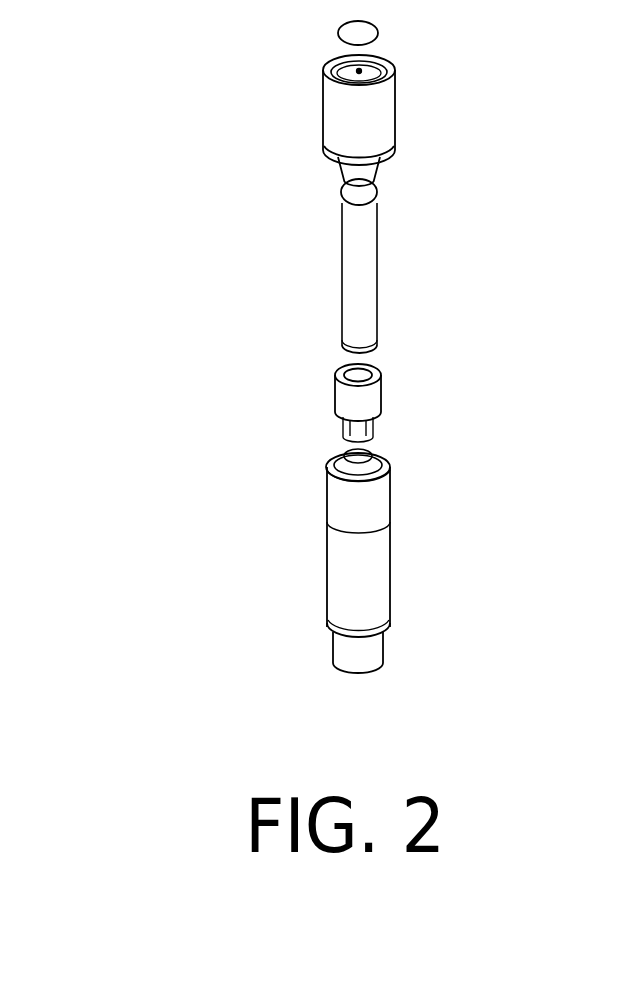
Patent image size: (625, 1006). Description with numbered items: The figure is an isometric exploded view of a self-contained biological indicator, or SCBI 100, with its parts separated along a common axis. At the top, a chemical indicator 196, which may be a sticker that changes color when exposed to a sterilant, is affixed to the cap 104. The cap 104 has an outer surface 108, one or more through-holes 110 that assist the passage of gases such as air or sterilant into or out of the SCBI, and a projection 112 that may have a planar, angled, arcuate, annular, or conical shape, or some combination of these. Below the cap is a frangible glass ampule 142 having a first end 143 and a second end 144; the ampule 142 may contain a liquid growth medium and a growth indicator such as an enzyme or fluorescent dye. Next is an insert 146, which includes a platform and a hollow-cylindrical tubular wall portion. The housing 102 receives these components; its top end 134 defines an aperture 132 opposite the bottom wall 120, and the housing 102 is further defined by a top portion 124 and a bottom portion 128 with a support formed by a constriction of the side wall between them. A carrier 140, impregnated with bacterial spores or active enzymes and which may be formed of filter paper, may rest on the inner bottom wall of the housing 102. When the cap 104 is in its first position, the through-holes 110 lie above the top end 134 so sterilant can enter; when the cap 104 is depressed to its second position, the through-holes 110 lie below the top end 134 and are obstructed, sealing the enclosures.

The self-contained biological indicator 100 is at (169, 206).
The housing 102 is at (295, 538).
The cap 104 is at (420, 101).
The outer surface 108 is at (350, 127).
The through-holes 110 is at (333, 105).
The projection 112 is at (368, 168).
The bottom wall 120 is at (347, 668).
The top portion 124 is at (412, 555).
The bottom portion 128 is at (402, 636).
The aperture 132 is at (386, 451).
The top end 134 is at (380, 470).
The carrier 140 is at (360, 450).
The frangible glass ampule 142 is at (362, 275).
The first end 143 is at (360, 209).
The second end 144 is at (357, 340).
The insert 146 is at (315, 388).
The chemical indicator 196 is at (338, 34).